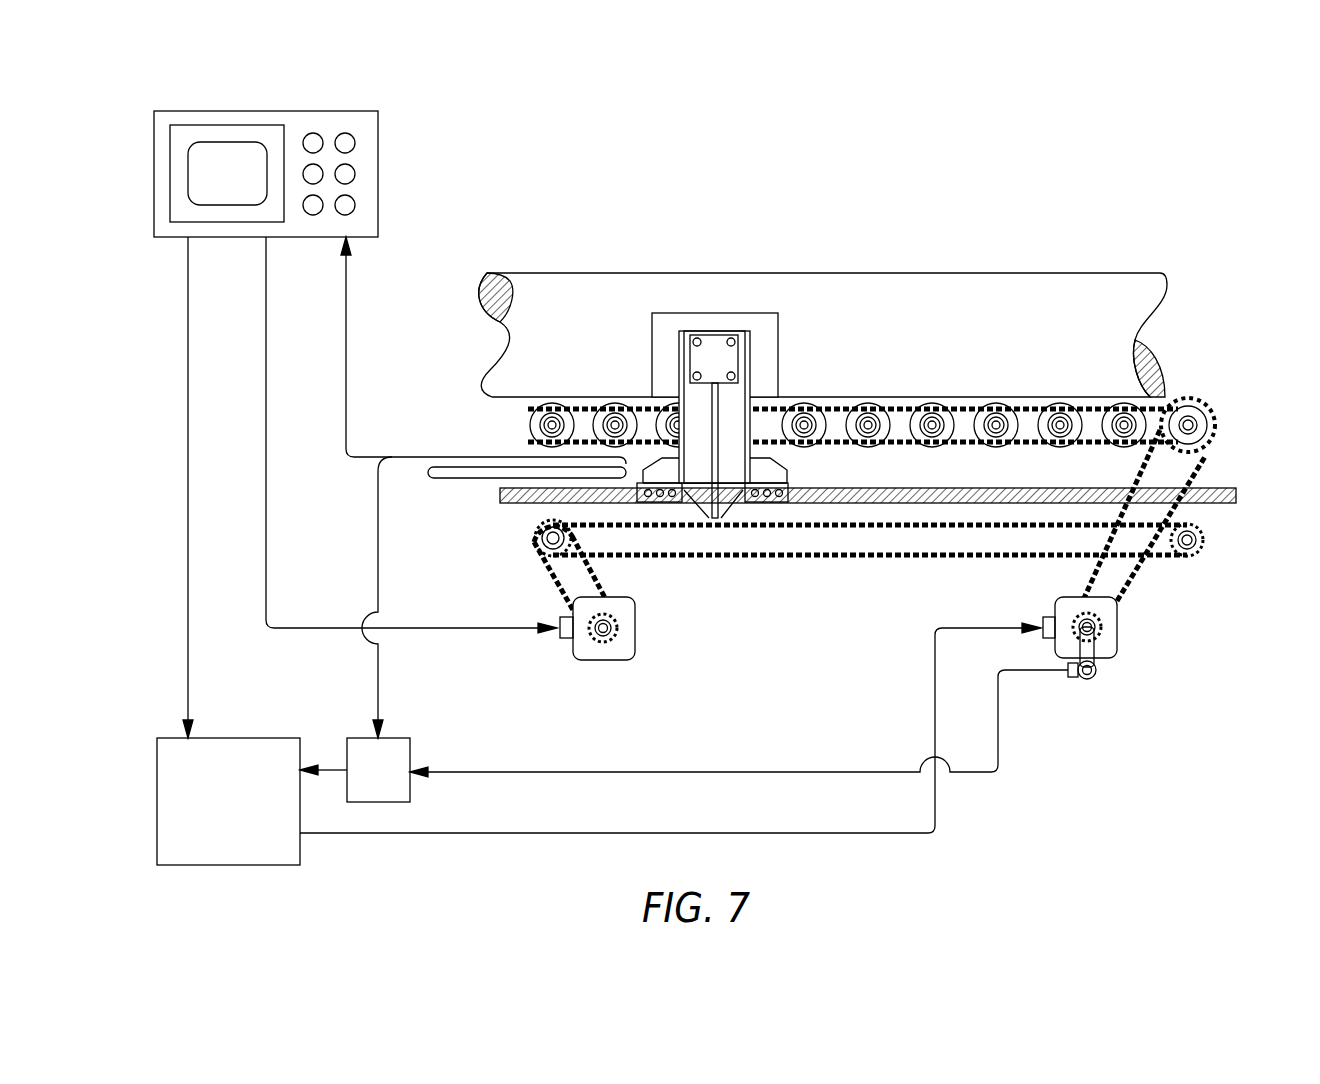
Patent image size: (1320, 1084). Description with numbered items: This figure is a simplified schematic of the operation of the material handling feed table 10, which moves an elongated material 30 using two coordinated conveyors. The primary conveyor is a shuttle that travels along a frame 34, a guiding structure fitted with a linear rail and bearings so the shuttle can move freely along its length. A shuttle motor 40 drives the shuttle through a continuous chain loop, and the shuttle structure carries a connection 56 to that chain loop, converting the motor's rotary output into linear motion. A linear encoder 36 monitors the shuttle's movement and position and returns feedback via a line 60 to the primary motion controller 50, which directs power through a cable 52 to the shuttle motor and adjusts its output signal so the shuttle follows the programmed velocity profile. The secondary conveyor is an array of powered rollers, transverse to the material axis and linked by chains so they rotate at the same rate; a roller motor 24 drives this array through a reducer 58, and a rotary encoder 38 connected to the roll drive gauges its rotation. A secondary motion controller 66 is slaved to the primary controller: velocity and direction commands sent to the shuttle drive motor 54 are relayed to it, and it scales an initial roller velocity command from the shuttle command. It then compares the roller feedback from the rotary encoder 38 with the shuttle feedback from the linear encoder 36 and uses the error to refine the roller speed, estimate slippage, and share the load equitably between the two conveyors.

The material handling feed table 10 is at (1131, 163).
The roller motor 24 is at (1114, 644).
The material 30 is at (876, 296).
The frame 34 is at (1230, 488).
The linear encoder 36 is at (652, 483).
The rotary encoder 38 is at (1095, 680).
The shuttle motor 40 is at (626, 644).
The primary motion controller 50 is at (368, 185).
The cable 52 is at (275, 572).
The shuttle drive motor 54 is at (605, 574).
The connection 56 is at (716, 522).
The reducer 58 is at (1133, 580).
The line 60 is at (423, 457).
The secondary motion controller 66 is at (178, 777).